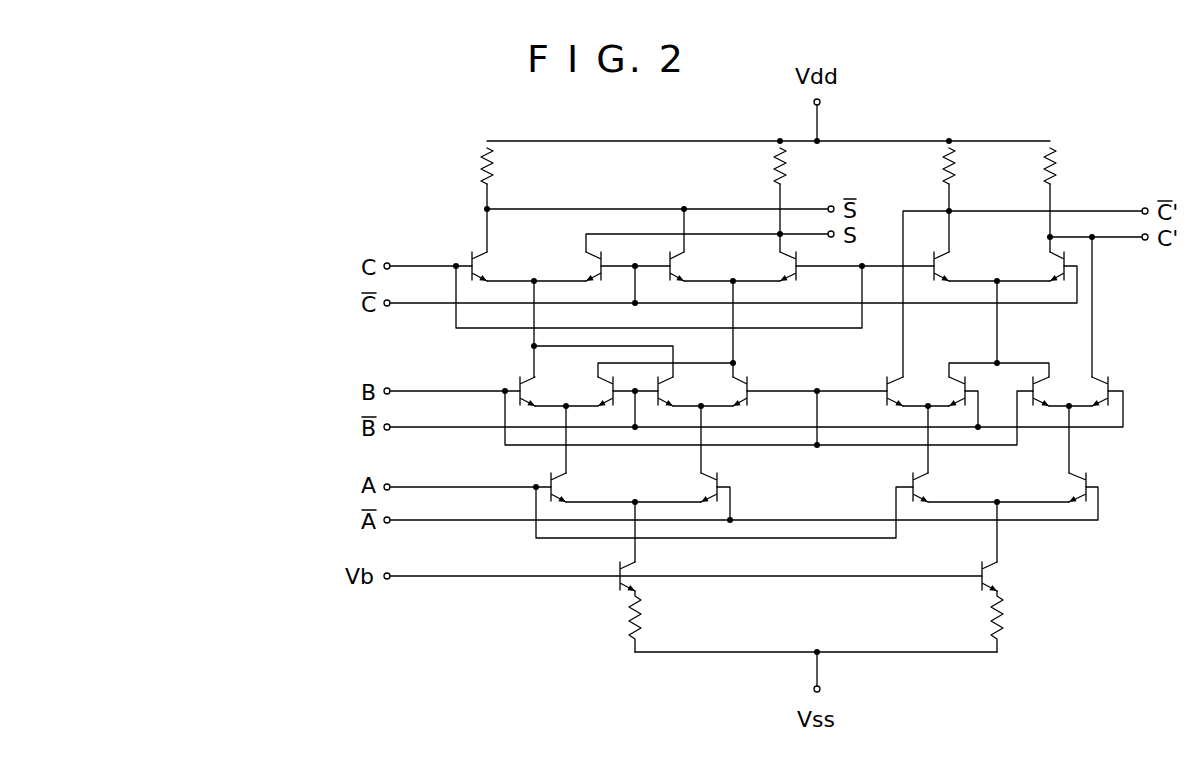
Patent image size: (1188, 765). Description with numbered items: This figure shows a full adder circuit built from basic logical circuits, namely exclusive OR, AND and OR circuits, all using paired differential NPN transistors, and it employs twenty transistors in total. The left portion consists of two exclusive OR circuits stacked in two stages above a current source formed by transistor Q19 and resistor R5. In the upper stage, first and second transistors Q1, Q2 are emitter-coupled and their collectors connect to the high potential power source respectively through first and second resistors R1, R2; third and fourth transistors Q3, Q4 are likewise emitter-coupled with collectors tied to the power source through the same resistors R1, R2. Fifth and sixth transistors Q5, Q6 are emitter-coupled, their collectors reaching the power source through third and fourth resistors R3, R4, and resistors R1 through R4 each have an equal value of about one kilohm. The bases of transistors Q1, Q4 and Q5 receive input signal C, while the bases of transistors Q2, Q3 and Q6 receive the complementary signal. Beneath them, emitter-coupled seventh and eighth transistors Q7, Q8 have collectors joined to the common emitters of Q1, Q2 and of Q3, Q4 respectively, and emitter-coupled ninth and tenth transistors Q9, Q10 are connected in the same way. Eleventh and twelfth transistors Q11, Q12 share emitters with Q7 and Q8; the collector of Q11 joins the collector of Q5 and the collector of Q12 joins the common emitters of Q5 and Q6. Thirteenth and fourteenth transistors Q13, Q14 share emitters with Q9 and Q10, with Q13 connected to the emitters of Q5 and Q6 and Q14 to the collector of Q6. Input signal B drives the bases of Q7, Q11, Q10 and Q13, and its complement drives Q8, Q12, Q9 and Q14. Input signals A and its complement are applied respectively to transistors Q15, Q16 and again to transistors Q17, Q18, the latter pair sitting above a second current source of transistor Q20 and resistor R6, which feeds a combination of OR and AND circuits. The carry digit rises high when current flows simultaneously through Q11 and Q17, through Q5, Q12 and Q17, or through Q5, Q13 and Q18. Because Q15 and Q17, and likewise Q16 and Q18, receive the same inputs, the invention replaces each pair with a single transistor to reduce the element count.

The first resistor R1 is at (482, 170).
The second resistor R2 is at (775, 170).
The third resistor R3 is at (943, 170).
The fourth resistor R4 is at (1043, 170).
The resistor R5 is at (614, 633).
The resistor R6 is at (1003, 626).
The first transistor Q1 is at (481, 263).
The second transistor Q2 is at (595, 263).
The third transistor Q3 is at (679, 263).
The fourth transistor Q4 is at (790, 263).
The fifth transistor Q5 is at (943, 263).
The sixth transistor Q6 is at (1058, 263).
The seventh transistor Q7 is at (516, 382).
The eighth transistor Q8 is at (607, 395).
The ninth transistor Q9 is at (667, 392).
The tenth transistor Q10 is at (740, 387).
The eleventh transistor Q11 is at (892, 382).
The twelfth transistor Q12 is at (960, 396).
The thirteenth transistor Q13 is at (1037, 392).
The fourteenth transistor Q14 is at (1099, 375).
The transistor Q15 is at (560, 485).
The transistor Q16 is at (707, 495).
The transistor Q17 is at (922, 485).
The transistor Q18 is at (1075, 497).
The transistor Q19 is at (605, 589).
The transistor Q20 is at (996, 590).